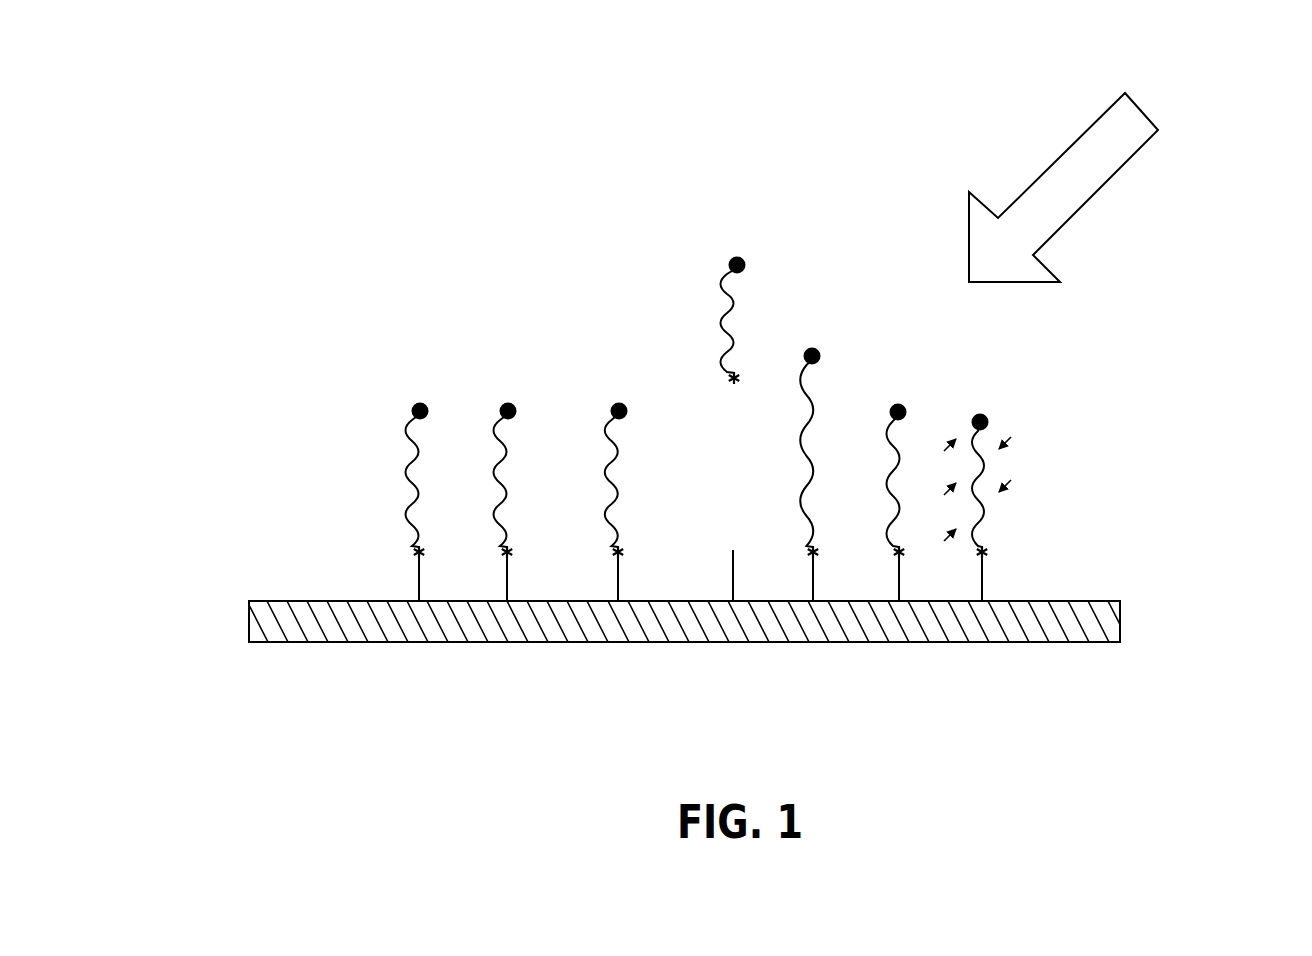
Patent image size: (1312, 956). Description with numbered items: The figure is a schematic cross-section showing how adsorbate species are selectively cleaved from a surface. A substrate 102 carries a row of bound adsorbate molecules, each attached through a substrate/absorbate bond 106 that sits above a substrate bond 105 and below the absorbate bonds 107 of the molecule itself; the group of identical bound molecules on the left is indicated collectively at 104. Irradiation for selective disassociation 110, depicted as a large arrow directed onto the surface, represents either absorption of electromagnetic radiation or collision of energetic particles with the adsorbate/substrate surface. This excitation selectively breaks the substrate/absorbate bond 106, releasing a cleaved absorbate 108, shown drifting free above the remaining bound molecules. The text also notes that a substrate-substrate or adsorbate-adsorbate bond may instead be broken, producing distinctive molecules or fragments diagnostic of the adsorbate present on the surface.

The substrate 102 is at (807, 642).
The immobilized molecules / probes 104 is at (375, 412).
The substrate bonds 105 is at (985, 585).
The substrate/absorbate bond 106 is at (987, 552).
The absorbate bonds 107 is at (1016, 528).
The cleaved absorbate 108 is at (730, 289).
The irradiation for selective disassociation 110 is at (1162, 100).